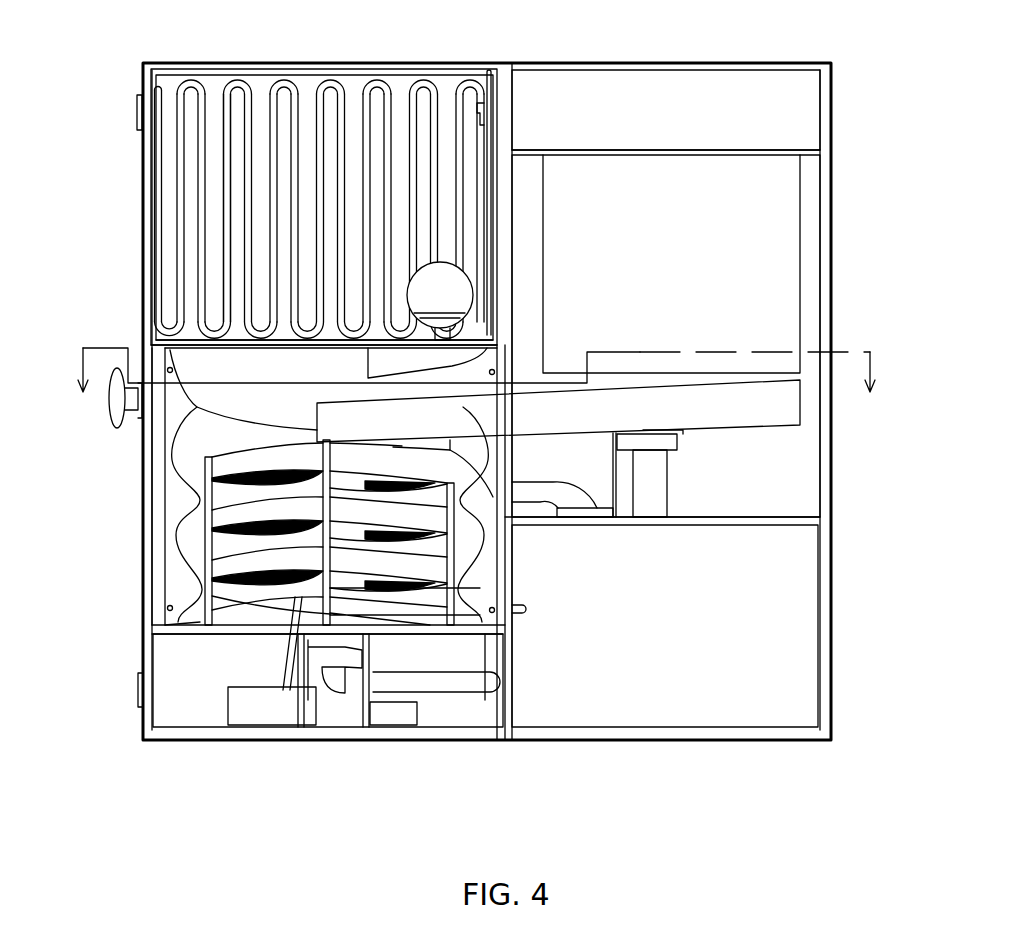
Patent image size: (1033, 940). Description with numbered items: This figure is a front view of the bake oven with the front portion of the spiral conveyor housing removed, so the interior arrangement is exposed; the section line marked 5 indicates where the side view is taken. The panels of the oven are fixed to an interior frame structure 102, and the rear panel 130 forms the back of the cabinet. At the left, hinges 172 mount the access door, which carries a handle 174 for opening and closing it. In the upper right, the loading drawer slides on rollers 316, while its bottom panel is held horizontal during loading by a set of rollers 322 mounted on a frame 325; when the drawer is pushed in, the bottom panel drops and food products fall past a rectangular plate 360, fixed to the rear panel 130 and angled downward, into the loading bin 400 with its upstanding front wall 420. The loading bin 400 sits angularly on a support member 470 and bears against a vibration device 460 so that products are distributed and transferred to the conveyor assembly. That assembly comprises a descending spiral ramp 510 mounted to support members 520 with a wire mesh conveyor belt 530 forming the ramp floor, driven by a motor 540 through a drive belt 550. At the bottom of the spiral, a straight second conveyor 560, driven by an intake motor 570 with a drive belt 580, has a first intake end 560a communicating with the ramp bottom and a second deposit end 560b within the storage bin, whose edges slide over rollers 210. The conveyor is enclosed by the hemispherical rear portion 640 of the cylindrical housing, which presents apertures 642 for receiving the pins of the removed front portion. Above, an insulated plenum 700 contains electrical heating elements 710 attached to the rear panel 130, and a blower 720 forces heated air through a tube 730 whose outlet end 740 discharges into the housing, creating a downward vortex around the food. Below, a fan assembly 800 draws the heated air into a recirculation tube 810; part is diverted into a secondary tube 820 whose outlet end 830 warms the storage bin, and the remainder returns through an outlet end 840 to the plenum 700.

The interior frame structure 102 is at (690, 733).
The rear panel 130 is at (808, 193).
The hinges 172 is at (137, 115).
The handle 174 is at (112, 402).
The rollers 210 is at (515, 627).
The rollers 316 is at (514, 92).
The rollers 322 is at (787, 135).
The frame 325 is at (660, 155).
The rectangular plate 360 is at (785, 244).
The loading bin 400 is at (757, 428).
The front side wall 420 is at (783, 402).
The vibration device 460 is at (668, 495).
The support member 470 is at (612, 472).
The descending spiral ramp 510 is at (207, 508).
The support members 520 is at (207, 550).
The conveyor belt 530 is at (217, 535).
The motor 540 is at (242, 710).
The drive belt 550 is at (287, 663).
The second conveyor 560 is at (412, 602).
The first intake end 560a is at (177, 630).
The second deposit end 560b is at (528, 609).
The intake motor 570 is at (397, 713).
The drive belt 580 is at (343, 700).
The hemispherical rear portion 640 is at (196, 440).
The apertures 642 is at (170, 370).
The insulated plenum 700 is at (210, 85).
The electrical heating elements 710 is at (255, 85).
The blower 720 is at (440, 301).
The tube 730 is at (468, 326).
The outlet end 740 is at (368, 365).
The fan assembly 800 is at (322, 643).
The recirculation tube 810 is at (486, 162).
The secondary tube 820 is at (535, 500).
The outlet end 830 is at (597, 513).
The outlet end 840 is at (480, 108).
The section line 5- 5 is at (477, 348).